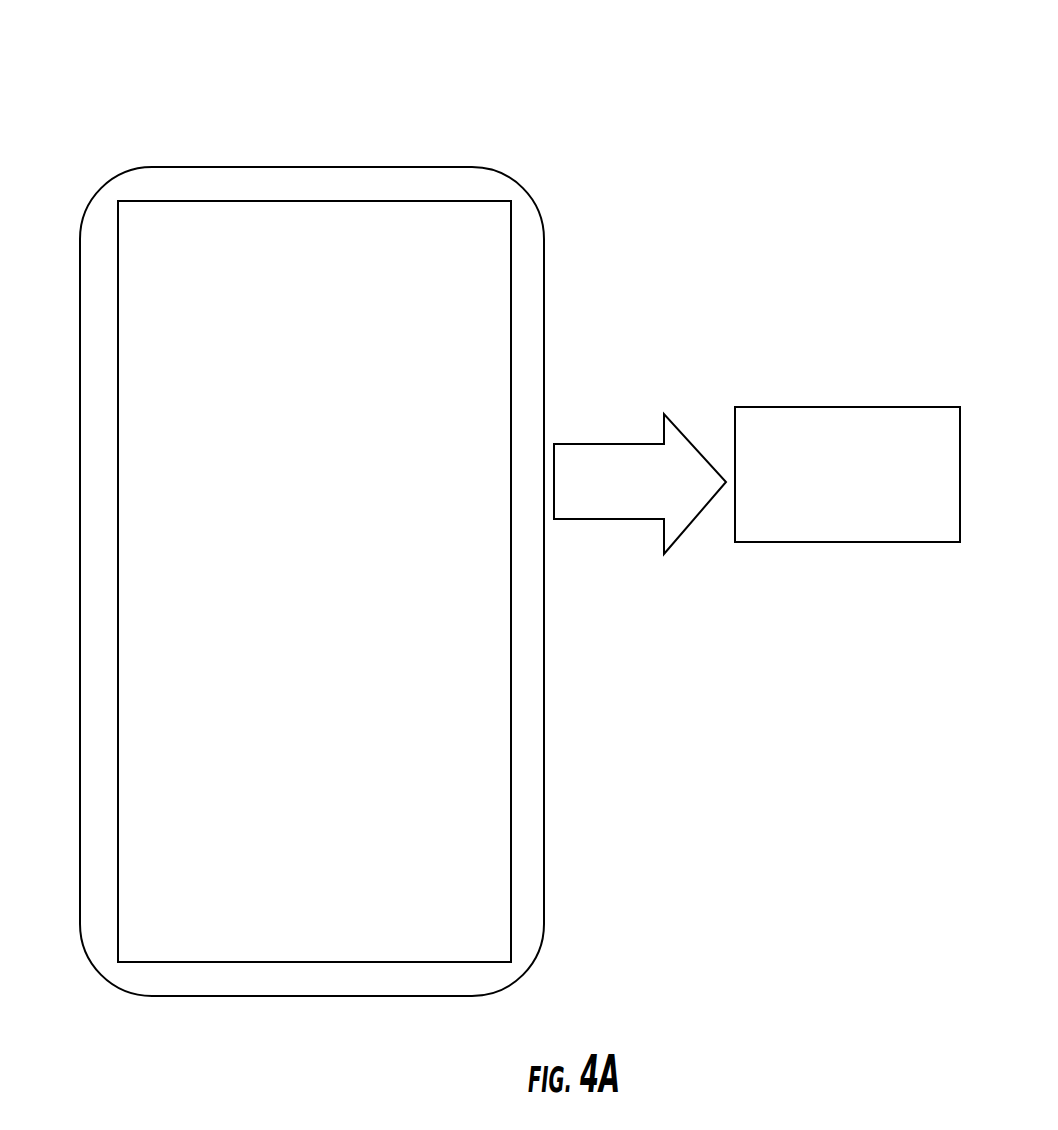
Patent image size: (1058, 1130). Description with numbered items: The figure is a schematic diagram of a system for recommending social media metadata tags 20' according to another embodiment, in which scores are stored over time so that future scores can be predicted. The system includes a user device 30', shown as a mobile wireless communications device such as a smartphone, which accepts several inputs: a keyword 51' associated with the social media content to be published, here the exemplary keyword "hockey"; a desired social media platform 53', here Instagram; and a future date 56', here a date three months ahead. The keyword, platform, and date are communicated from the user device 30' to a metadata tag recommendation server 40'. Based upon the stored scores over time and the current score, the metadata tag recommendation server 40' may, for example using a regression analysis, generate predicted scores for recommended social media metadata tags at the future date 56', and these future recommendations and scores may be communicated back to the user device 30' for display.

The system for recommending social media metadata tags 20' is at (501, 502).
The user device 30' is at (352, 562).
The metadata tag recommendation server 40' is at (847, 440).
The keyword 51' is at (432, 408).
The social media platform 53' is at (206, 523).
The future date 56' is at (203, 624).